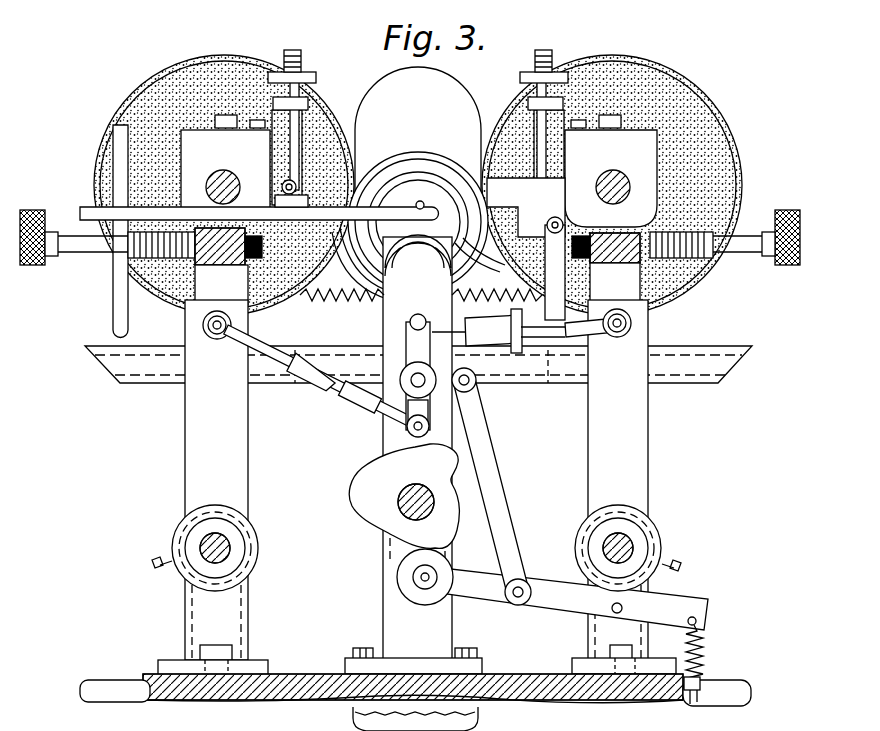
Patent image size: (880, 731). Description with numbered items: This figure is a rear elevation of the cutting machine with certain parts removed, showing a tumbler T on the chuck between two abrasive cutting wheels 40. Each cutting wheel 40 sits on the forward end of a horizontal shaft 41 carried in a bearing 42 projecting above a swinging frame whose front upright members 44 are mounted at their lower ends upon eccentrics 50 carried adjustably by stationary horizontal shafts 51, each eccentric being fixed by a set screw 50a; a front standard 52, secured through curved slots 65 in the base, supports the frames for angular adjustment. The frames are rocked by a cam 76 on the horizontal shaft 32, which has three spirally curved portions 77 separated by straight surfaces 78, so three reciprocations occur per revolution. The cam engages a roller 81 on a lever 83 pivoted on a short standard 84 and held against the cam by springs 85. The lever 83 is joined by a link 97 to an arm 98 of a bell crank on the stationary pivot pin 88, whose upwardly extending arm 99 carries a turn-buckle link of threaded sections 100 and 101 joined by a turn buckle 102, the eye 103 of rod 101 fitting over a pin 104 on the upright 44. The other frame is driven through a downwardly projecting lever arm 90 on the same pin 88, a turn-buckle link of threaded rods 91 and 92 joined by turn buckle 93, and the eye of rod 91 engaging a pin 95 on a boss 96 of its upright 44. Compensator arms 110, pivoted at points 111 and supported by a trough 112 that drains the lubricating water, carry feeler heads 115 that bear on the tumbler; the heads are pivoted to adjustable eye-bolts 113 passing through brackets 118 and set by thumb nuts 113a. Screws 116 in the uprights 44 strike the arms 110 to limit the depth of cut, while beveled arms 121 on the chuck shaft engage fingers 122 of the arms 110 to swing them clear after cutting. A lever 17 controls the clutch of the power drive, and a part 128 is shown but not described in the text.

The cutting wheels 40 is at (150, 88).
The brackets 118 is at (418, 185).
The thumb nuts 113a is at (316, 78).
The tumbler T is at (448, 80).
The arms 121 is at (385, 170).
The bearing 42 is at (420, 115).
The horizontal shaft 41 is at (219, 175).
The lever 17 is at (123, 170).
The eye-bolts 113 is at (547, 150).
The feeler heads 115 is at (517, 178).
The lever bar 128 is at (259, 202).
The fingers 122 is at (386, 303).
The screws 116 is at (82, 255).
The compensator arms 110 is at (278, 275).
The boss 96 is at (217, 311).
The pin 95 is at (203, 328).
The screw-threaded rod 91 is at (242, 343).
The pivot points 111 is at (293, 320).
The upwardly extending arm 99 is at (405, 352).
The screw-threaded section 100 is at (462, 345).
The turn buckle 102 is at (508, 347).
The screw-threaded rod 101 is at (590, 343).
The eye 103 is at (636, 322).
The pin 104 is at (633, 330).
The trough 112 is at (685, 378).
The turn buckle 93 is at (315, 393).
The screw-threaded rod 92 is at (378, 423).
The stationary pivot pin 88 is at (385, 440).
The lever arm 90 is at (410, 433).
The arm 98 is at (456, 392).
The link 97 is at (493, 461).
The upright members 44 is at (250, 495).
The horizontal shaft 32 is at (417, 488).
The spirally curved portions 77 is at (370, 475).
The straight surfaces 78 is at (458, 517).
The cam 76 is at (392, 520).
The stationary horizontal shafts 51 is at (232, 545).
The eccentrics 50 is at (257, 556).
The set screw 50a is at (155, 563).
The front standard 52 is at (238, 606).
The curved slots 65 is at (242, 672).
The roller 81 is at (423, 605).
The lever 83 is at (540, 614).
The springs 85 is at (705, 656).
The short standard 84 is at (604, 680).